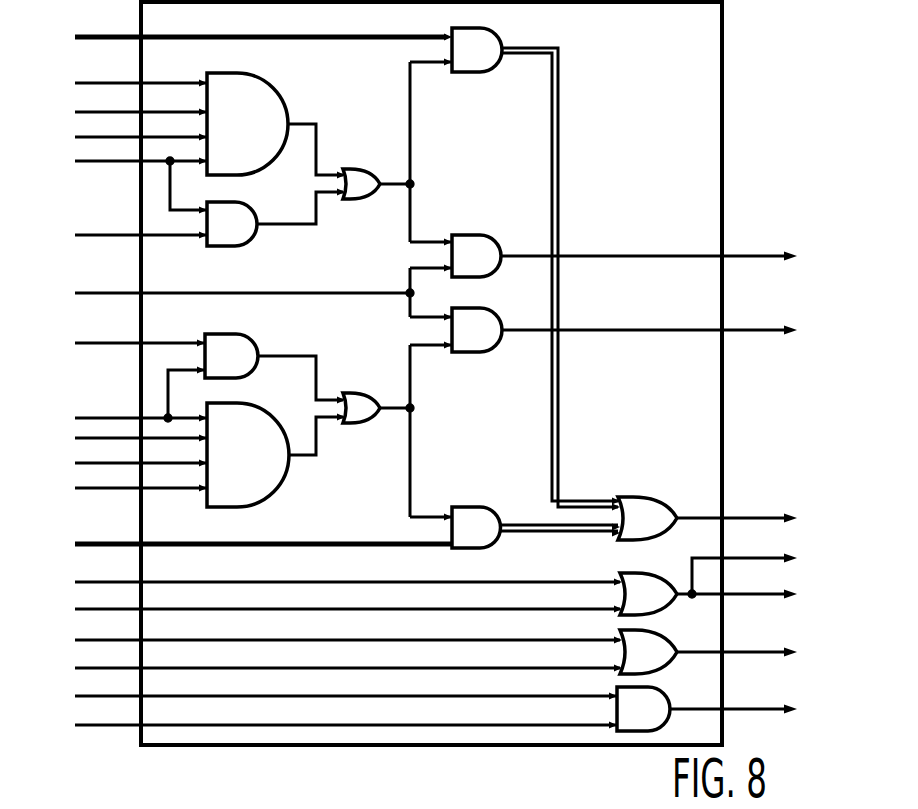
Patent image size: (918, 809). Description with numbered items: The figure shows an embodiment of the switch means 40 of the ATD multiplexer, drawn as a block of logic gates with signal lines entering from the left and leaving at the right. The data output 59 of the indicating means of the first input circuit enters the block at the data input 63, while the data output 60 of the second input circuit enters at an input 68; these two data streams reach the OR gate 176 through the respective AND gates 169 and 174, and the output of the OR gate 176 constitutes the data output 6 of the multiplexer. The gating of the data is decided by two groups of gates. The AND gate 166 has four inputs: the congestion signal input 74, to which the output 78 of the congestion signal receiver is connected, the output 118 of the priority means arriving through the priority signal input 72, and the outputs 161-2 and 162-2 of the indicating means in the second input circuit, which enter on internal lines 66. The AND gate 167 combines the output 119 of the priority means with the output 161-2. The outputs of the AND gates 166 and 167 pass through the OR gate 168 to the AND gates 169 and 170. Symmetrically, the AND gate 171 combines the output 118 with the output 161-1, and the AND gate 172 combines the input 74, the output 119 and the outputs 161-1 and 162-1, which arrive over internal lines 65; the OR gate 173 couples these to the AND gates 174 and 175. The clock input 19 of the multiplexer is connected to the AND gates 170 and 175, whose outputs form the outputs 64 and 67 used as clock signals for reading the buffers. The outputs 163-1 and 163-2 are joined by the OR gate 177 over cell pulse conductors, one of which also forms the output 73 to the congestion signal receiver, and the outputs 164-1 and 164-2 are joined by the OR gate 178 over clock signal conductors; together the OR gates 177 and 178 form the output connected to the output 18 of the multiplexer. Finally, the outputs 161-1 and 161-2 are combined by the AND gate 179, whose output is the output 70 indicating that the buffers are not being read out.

The switch means 40 is at (722, 138).
The data output of indicating means 59 is at (80, 31).
The data input of switch means 63 is at (143, 37).
The output of congestion signal receiver 78 is at (80, 82).
The congestion signal input 74 is at (142, 83).
The output of priority means 118 is at (82, 110).
The priority signal input 72 is at (142, 112).
The output of indicating means in input circuit 31-2 161-2 is at (80, 135).
The internal signal line 66 is at (142, 137).
The output of indicating means in input circuit 31-2 162-2 is at (85, 162).
The output of priority means 119 is at (80, 236).
The clock input of the multiplexer 19 is at (77, 296).
The control signal input of switch means 65 is at (140, 416).
The output of indicating means in input circuit 31-1 161-1 is at (80, 417).
The output of indicating means in input circuit 31-1 162-1 is at (85, 440).
The data output of input circuit 31-2 60 is at (80, 543).
The internal bus line 68 is at (143, 546).
The output of indicating means in input circuit 31-1 163-1 is at (85, 581).
The output of indicating means in input circuit 31-2 163-2 is at (85, 609).
The output of indicating means in input circuit 31-1 164-1 is at (83, 641).
The output of indicating means in input circuit 31-2 164-2 is at (83, 669).
The AND gate 166 is at (265, 73).
The AND gate 167 is at (222, 247).
The OR gate 168 is at (358, 200).
The AND gate 169 is at (478, 72).
The AND gate 170 is at (486, 234).
The output of switch means 64 is at (724, 254).
The AND gate 175 is at (484, 352).
The output of switch means 67 is at (724, 329).
The AND gate 171 is at (252, 335).
The AND gate 172 is at (280, 490).
The OR gate 173 is at (358, 393).
The AND gate 174 is at (476, 507).
The OR gate 176 is at (642, 497).
The data output 6 is at (724, 516).
The OR gate 177 is at (640, 573).
The output of switch means 73 is at (724, 558).
The OR gate 178 is at (652, 631).
The output of the multiplexer 18 is at (724, 652).
The AND gate 179 is at (655, 688).
The output of switch means 70 is at (724, 708).